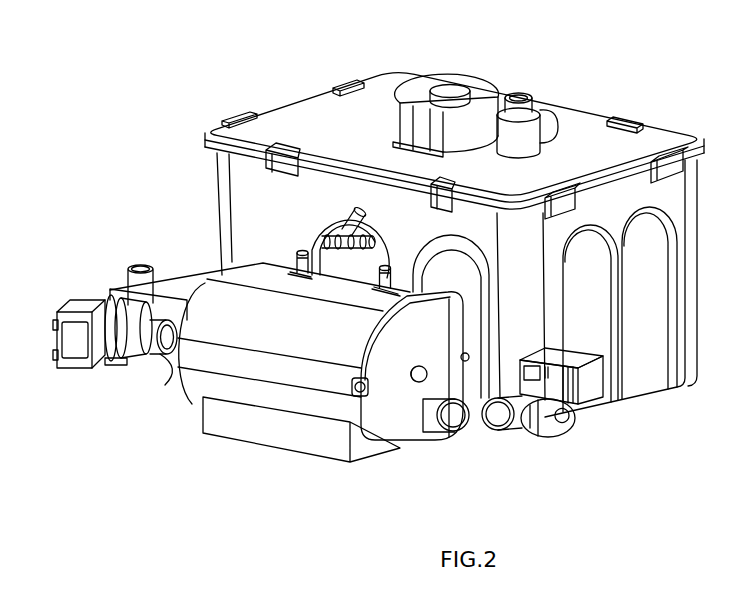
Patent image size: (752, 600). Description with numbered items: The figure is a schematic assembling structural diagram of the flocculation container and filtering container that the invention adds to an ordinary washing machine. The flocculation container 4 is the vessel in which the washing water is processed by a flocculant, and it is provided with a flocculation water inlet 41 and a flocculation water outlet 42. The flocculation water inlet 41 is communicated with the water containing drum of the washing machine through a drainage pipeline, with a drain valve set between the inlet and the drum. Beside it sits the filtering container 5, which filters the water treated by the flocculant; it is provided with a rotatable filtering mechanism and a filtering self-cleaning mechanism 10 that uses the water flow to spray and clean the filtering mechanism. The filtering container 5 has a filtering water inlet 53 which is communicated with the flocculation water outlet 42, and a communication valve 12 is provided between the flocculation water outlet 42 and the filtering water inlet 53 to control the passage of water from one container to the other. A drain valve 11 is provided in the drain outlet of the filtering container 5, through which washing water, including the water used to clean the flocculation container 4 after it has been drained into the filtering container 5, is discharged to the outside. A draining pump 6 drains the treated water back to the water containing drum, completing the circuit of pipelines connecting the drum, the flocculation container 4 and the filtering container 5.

The flocculation container 4 is at (572, 102).
The flocculation water inlet 41 is at (520, 123).
The filtering container 5 is at (214, 372).
The draining pump 6 is at (98, 318).
The filtering self-cleaning mechanism 10 is at (385, 290).
The drain valve 11 is at (173, 282).
The communication valve 12 is at (578, 390).
The flocculation water outlet 42 is at (503, 421).
The filtering water inlet 53 is at (452, 421).